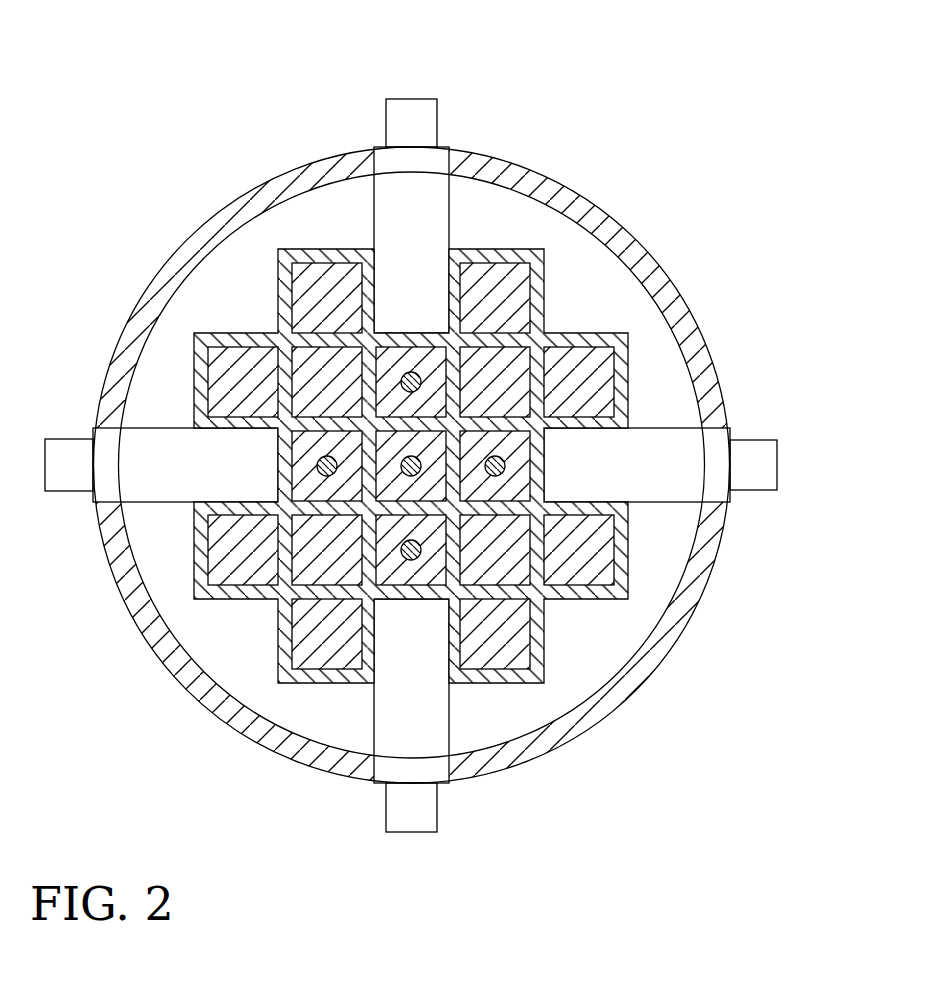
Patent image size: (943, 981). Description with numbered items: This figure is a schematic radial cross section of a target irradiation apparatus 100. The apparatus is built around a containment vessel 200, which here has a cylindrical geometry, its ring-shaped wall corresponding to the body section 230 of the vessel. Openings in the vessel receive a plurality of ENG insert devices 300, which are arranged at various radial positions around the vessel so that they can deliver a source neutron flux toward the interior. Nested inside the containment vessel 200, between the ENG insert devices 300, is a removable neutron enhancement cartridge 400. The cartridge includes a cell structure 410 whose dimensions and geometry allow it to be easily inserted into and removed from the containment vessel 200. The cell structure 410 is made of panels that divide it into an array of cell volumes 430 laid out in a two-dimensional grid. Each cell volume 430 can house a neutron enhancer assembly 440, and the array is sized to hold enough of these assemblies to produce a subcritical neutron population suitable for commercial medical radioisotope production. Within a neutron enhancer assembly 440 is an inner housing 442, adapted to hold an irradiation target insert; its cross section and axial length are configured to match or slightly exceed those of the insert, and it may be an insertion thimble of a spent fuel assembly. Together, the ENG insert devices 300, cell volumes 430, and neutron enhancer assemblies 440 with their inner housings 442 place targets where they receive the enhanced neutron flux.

The target irradiation apparatus 100 is at (432, 426).
The containment vessel 200 is at (411, 465).
The body section 230 is at (160, 663).
The ENG insert devices 300 is at (400, 815).
The removable neutron enhancement cartridge 400 is at (475, 428).
The cell structure 410 is at (632, 362).
The cell volumes 430 is at (307, 293).
The neutron enhancer assembly 440 is at (520, 480).
The inner housing 442 is at (420, 547).